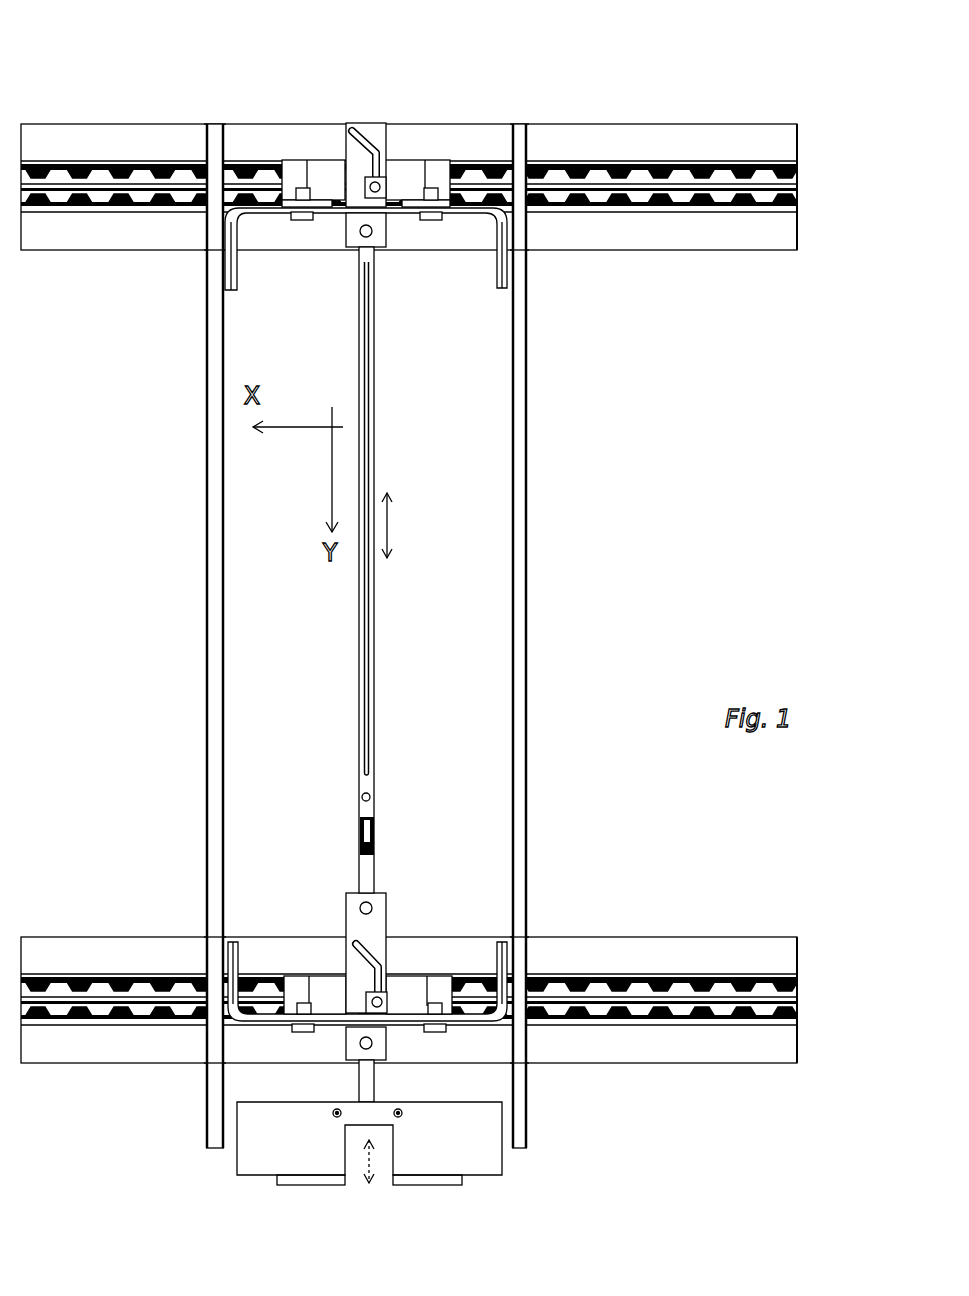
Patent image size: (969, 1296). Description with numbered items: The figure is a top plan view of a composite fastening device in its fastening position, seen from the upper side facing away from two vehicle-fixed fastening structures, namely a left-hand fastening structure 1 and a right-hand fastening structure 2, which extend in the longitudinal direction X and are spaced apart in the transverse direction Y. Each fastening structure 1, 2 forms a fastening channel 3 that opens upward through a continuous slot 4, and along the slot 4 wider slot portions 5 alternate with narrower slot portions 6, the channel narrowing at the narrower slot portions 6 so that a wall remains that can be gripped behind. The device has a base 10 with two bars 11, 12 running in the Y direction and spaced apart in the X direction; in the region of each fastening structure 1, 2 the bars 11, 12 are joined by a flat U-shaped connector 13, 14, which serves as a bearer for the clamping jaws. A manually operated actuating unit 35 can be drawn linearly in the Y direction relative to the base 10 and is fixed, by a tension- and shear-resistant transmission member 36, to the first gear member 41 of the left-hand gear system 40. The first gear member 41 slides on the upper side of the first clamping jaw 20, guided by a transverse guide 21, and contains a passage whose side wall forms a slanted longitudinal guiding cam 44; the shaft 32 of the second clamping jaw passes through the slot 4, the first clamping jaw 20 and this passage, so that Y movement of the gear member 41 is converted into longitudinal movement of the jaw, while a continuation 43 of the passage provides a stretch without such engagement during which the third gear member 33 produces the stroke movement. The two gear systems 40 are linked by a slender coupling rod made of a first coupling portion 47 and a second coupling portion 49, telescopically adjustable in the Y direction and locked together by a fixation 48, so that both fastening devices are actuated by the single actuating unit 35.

The left-hand fastening structure 1 is at (732, 1055).
The right-hand fastening structure 2 is at (750, 127).
The fastening channel 3 is at (801, 177).
The slot 4 is at (652, 184).
The wider slot portions 5 is at (692, 191).
The narrower slot portions 6 is at (747, 206).
The base 10 is at (542, 478).
The bar 11 is at (207, 420).
The bar 12 is at (527, 552).
The connector 13 is at (233, 962).
The connector 14 is at (220, 222).
The first clamping jaw 20 is at (416, 168).
The transverse guide 21 is at (342, 997).
The shaft 32 is at (389, 183).
The third gear member 33 is at (393, 192).
The actuating unit 35 is at (272, 1148).
The transmission member 36 is at (363, 1078).
The gear system 40 is at (278, 88).
The first gear member 41 is at (384, 236).
The continuation 43 is at (345, 155).
The longitudinal guiding cam 44 is at (368, 123).
The first coupling portion 47 is at (366, 872).
The fixation 48 is at (361, 797).
The second coupling portion 49 is at (360, 722).